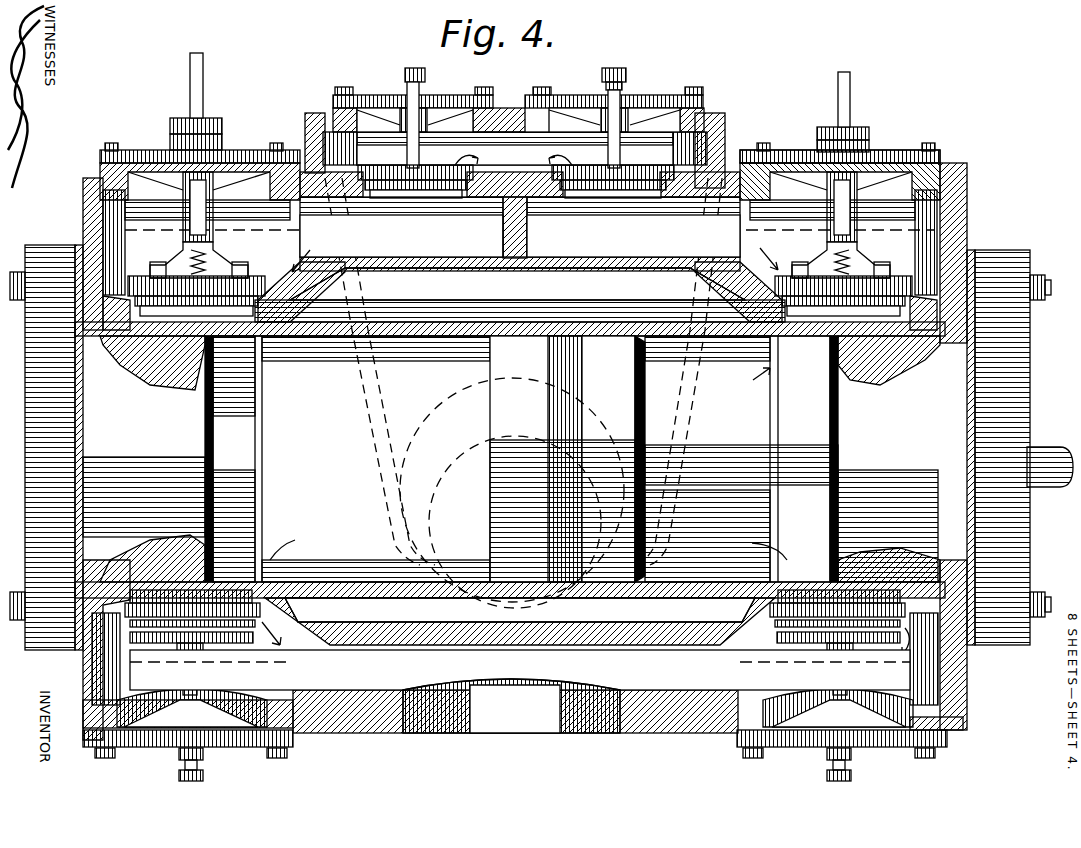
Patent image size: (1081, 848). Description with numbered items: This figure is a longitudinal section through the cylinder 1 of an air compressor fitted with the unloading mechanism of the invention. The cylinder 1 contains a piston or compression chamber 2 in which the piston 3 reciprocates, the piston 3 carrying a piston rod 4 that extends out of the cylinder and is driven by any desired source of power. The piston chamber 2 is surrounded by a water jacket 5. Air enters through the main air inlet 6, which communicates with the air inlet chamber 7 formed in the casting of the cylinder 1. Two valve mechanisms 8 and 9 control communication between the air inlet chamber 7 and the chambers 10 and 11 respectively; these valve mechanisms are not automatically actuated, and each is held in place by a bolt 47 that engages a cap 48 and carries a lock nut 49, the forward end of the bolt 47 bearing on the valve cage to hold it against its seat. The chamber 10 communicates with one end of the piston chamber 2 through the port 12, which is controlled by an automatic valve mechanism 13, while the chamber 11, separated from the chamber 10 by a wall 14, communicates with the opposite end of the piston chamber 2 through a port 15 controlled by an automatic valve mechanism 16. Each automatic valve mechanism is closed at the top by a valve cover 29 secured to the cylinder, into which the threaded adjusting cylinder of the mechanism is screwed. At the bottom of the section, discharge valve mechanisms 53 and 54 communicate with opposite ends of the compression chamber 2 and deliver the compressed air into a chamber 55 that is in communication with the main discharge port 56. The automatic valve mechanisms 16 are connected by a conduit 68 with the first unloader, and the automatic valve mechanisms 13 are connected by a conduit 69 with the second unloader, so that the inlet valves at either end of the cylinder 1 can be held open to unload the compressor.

The cylinder 1 is at (530, 424).
The piston or compression chamber 2 is at (521, 459).
The piston 3 is at (567, 459).
The piston rod 4 is at (693, 478).
The water jacket 5 is at (520, 450).
The main air inlet 6 is at (460, 452).
The air inlet chamber 7 is at (515, 154).
The valve mechanism 8 is at (413, 133).
The valve mechanism 9 is at (614, 123).
The chamber 10 is at (397, 234).
The chamber 11 is at (652, 233).
The port 12 is at (193, 350).
The automatic valve mechanism 13 is at (200, 217).
The wall 14 is at (504, 240).
The port 15 is at (870, 377).
The automatic valve mechanism 16 is at (840, 221).
The valve cover 29 is at (885, 163).
The bolt 47 is at (622, 135).
The cap 48 is at (565, 100).
The lock nut 49 is at (604, 85).
The discharge valve mechanism 53 is at (189, 660).
The discharge valve mechanism 54 is at (842, 662).
The chamber 55 is at (520, 670).
The main discharge port 56 is at (511, 706).
The conduit 68 is at (850, 107).
The conduit 69 is at (191, 90).